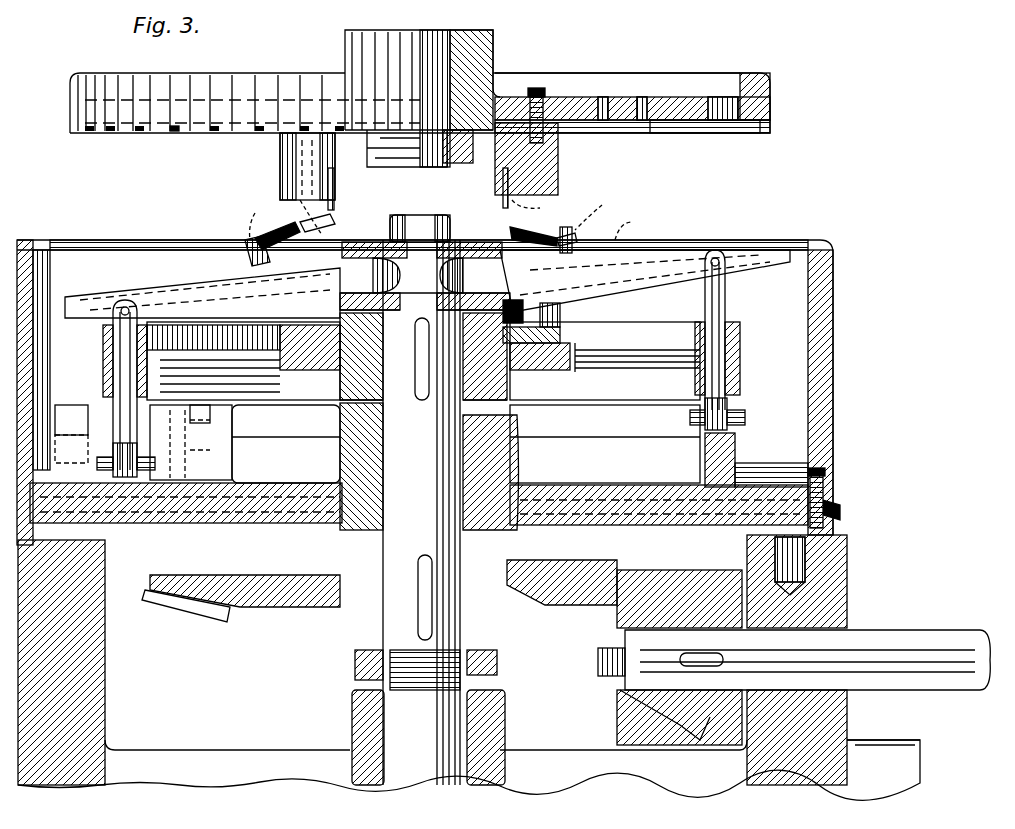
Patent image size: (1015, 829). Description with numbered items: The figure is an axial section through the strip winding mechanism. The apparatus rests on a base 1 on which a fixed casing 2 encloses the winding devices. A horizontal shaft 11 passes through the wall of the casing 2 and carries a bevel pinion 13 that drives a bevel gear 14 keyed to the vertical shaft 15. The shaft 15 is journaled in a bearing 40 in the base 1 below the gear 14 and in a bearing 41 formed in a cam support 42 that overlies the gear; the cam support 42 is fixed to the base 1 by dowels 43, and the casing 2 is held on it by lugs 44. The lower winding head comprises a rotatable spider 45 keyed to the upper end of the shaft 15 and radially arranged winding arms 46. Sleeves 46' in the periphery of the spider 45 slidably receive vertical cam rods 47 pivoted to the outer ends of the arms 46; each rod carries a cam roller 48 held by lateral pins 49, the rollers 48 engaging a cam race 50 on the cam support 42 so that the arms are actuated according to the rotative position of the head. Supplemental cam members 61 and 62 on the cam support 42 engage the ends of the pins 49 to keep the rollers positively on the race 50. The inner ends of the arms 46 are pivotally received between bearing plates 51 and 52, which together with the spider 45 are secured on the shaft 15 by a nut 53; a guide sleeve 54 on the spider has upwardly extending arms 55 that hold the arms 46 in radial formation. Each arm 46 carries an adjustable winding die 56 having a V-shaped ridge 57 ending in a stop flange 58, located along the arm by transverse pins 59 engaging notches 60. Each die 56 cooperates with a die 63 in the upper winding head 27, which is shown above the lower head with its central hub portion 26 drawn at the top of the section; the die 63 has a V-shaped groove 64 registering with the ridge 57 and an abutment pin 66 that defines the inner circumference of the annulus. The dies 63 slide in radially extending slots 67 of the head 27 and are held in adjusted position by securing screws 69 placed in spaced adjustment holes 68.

The base 1 is at (95, 682).
The fixed casing 2 is at (830, 441).
The horizontal shaft 11 is at (794, 660).
The bevel pinion 13 is at (648, 712).
The bevel gear 14 is at (200, 615).
The vertical shaft 15 is at (416, 222).
The hub 26 is at (437, 47).
The upper winding head 27 is at (705, 68).
The bearing 40 is at (350, 715).
The bearing 41 is at (383, 487).
The cam support 42 is at (300, 490).
The dowels 43 is at (800, 555).
The lugs 44 is at (842, 522).
The rotatable spider 45 is at (557, 370).
The winding arms 46 is at (427, 284).
The sleeves 46' is at (419, 359).
The cam rods 47 is at (118, 358).
The cam roller 48 is at (140, 454).
The pins 49 is at (100, 462).
The cam race 50 is at (280, 440).
The bearing plate 51 is at (512, 313).
The bearing plate 52 is at (358, 242).
The nut 53 is at (428, 222).
The guide sleeve 54 is at (561, 334).
The upwardly extending arms 55 is at (282, 302).
The winding die 56 is at (432, 224).
The V-shaped ridge 57 is at (406, 229).
The stop flange 58 is at (418, 236).
The transverse pins 59 is at (426, 215).
The notches 60 is at (629, 224).
The supplemental cam member 61 is at (60, 405).
The supplemental cam member 62 is at (232, 424).
The die 63 is at (283, 183).
The V-shaped groove 64 is at (428, 216).
The abutment pin 66 is at (334, 205).
The radially extending slots 67 is at (215, 131).
The adjustment holes 68 is at (642, 97).
The securing screws 69 is at (538, 90).